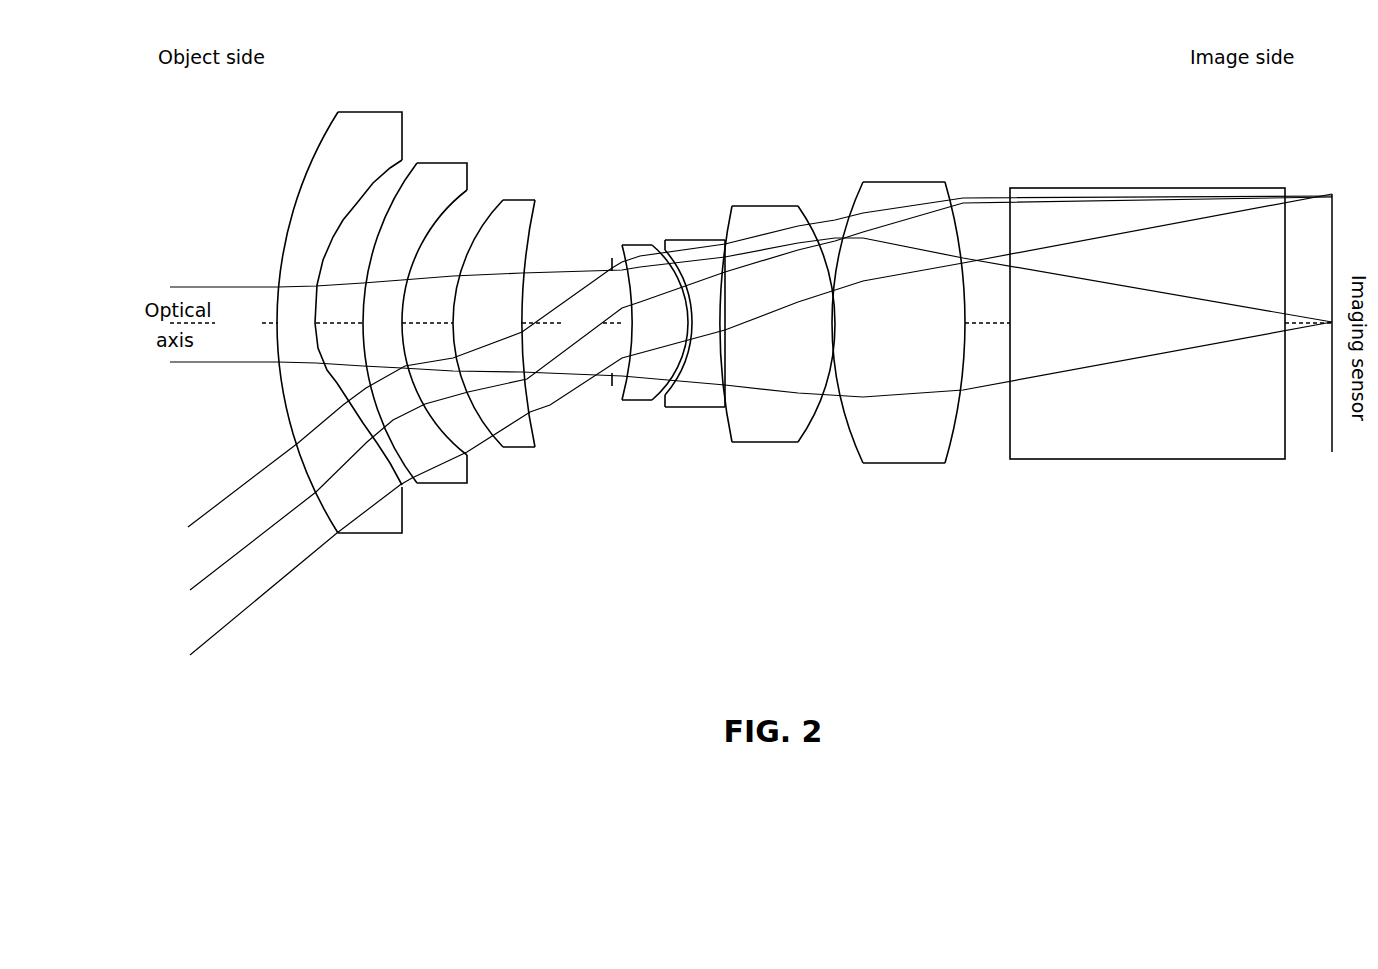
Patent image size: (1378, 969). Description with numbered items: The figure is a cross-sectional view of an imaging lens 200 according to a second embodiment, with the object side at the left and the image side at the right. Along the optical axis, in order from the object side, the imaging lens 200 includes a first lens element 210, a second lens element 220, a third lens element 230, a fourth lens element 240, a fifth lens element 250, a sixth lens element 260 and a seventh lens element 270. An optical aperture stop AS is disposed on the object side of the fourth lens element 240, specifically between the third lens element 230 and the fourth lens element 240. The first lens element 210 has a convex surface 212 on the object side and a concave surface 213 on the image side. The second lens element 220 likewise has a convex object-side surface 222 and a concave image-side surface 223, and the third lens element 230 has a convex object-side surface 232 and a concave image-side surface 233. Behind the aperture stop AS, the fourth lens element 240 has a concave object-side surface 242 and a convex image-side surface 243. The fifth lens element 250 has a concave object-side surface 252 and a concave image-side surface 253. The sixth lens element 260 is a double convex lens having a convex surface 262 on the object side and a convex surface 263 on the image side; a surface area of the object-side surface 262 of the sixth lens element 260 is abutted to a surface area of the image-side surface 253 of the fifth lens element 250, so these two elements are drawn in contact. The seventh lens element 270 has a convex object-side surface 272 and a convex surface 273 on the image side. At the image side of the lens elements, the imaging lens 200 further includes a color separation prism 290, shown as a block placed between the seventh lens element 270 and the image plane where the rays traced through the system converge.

The imaging lens 200 is at (1020, 75).
The first lens element 210 is at (307, 310).
The convex surface 212 is at (302, 188).
The concave surface 213 is at (323, 262).
The second lens element 220 is at (394, 308).
The convex object-side surface 222 is at (364, 364).
The concave image-side surface 223 is at (412, 268).
The third lens element 230 is at (494, 314).
The convex object-side surface 232 is at (452, 340).
The concave image-side surface 233 is at (524, 378).
The optical aperture stop AS is at (612, 264).
The fourth lens element 240 is at (628, 290).
The concave object-side surface 242 is at (632, 335).
The convex image-side surface 243 is at (658, 252).
The fifth lens element 250 is at (697, 358).
The concave object-side surface 252 is at (673, 390).
The concave image-side surface 253 is at (722, 384).
The sixth lens element 260 is at (759, 314).
The convex surface 262 is at (727, 424).
The convex surface 263 is at (815, 237).
The seventh lens element 270 is at (900, 328).
The convex object-side surface 272 is at (852, 445).
The convex surface 273 is at (952, 435).
The color separation prism 290 is at (1147, 323).